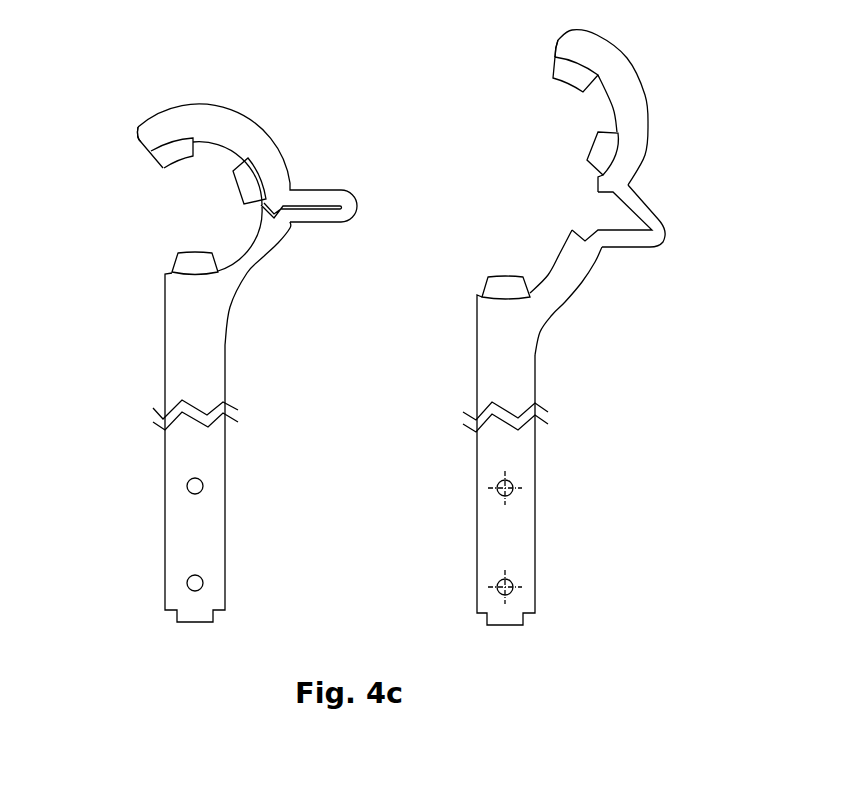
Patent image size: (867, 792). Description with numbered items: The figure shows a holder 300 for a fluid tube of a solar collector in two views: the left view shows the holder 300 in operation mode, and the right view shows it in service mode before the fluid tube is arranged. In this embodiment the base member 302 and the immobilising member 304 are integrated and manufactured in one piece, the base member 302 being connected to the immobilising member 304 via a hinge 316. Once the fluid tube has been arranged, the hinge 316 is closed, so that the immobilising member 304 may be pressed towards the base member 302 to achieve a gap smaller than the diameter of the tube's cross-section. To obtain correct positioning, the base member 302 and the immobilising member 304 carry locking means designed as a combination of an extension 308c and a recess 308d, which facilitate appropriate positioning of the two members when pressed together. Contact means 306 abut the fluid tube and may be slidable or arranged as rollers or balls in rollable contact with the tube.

The holder 300 is at (237, 85).
The base member 302 is at (188, 328).
The immobilising member 304 is at (142, 133).
The contact means 306 is at (239, 183).
The extension 308c is at (277, 201).
The recess 308d is at (283, 222).
The hinge 316 is at (662, 202).